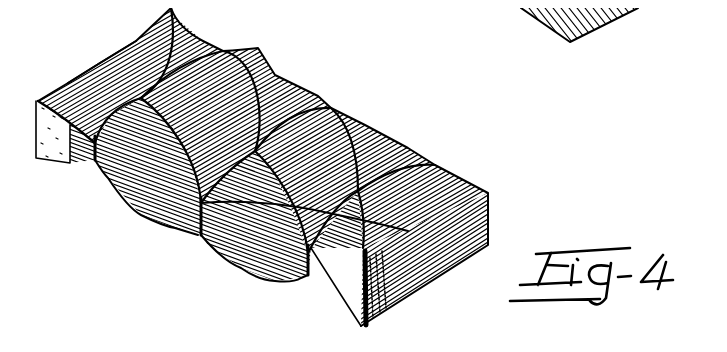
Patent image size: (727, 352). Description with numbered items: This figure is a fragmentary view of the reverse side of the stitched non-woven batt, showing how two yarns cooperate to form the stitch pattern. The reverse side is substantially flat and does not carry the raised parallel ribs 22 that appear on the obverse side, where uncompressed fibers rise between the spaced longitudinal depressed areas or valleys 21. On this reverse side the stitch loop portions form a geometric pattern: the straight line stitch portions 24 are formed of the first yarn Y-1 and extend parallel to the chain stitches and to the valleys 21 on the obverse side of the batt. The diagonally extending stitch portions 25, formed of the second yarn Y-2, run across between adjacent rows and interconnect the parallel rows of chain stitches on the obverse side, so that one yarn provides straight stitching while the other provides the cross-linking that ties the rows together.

The valleys 21 is at (78, 171).
The raised parallel ribs 22 is at (135, 212).
The straight line stitch portions 24 is at (192, 42).
The diagonally extending stitch portions 25 is at (102, 20).
The first yarn Y-1 is at (402, 152).
The second yarn Y-2 is at (245, 50).